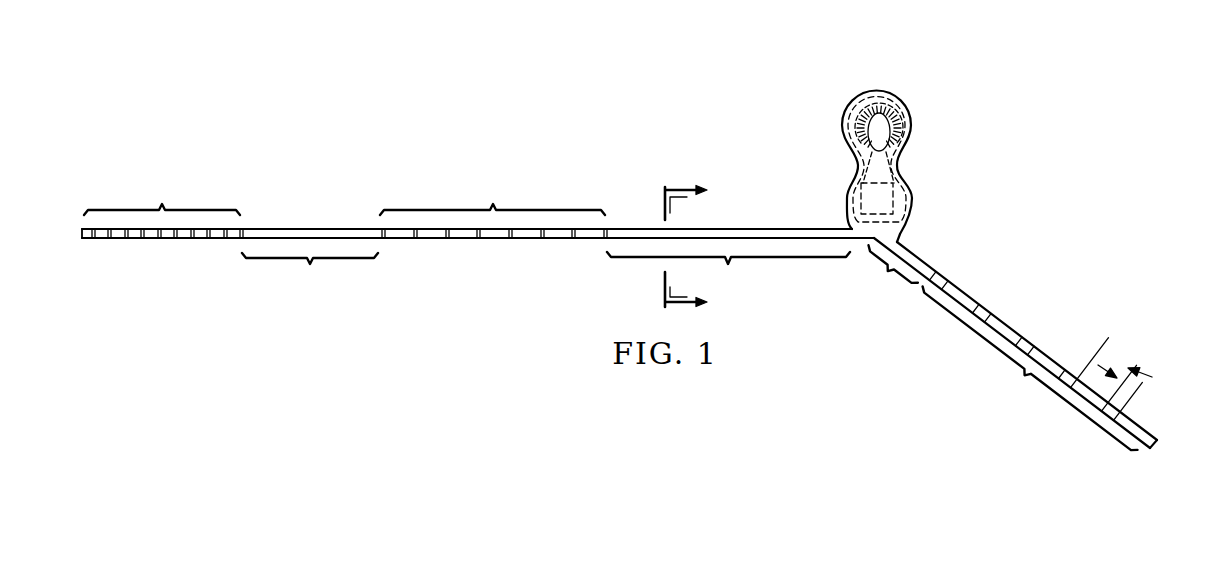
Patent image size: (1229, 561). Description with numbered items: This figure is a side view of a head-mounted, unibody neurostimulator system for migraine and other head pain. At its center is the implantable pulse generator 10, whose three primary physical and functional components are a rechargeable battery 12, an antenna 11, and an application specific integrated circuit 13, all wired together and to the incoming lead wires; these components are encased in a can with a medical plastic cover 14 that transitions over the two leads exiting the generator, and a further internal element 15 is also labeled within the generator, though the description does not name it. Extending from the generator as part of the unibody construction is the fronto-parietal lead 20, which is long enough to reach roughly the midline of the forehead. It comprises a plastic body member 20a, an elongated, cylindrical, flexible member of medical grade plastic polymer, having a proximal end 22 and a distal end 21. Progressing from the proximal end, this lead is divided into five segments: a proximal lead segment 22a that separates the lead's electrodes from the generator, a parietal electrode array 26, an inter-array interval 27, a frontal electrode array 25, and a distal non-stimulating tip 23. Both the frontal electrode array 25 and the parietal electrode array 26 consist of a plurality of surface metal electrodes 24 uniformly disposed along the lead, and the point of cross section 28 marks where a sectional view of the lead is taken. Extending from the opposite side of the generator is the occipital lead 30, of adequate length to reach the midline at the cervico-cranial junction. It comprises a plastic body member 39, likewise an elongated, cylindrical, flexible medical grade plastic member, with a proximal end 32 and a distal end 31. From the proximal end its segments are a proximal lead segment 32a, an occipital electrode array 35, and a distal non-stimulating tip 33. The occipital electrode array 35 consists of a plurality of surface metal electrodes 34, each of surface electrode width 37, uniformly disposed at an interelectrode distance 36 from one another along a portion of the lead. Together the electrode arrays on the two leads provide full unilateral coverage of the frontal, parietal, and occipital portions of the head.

The implantable pulse generator 10 is at (880, 87).
The antenna 11 is at (912, 120).
The battery 12 is at (845, 120).
The application specific integrated circuit 13 is at (895, 200).
The medical plastic cover 14 is at (856, 168).
The reflector 15 is at (910, 160).
The fronto-parietal lead 20 is at (634, 222).
The plastic body member 20a is at (762, 229).
The distal end 21 is at (82, 232).
The proximal end 22 is at (822, 220).
The proximal lead segment 22a is at (728, 277).
The distal non-stimulating tip 23 is at (88, 239).
The surface metal electrode 24 is at (143, 239).
The frontal electrode array 25 is at (162, 197).
The parietal electrode array 26 is at (492, 197).
The inter-array interval 27 is at (310, 276).
The point of cross section 28 is at (676, 189).
The occipital lead 30 is at (1026, 328).
The distal end 31 is at (1160, 451).
The proximal end 32 is at (922, 236).
The proximal lead segment 32a is at (890, 276).
The distal non-stimulating tip 33 is at (1154, 442).
The surface metal electrode 34 is at (990, 313).
The occipital electrode array 35 is at (1030, 368).
The interelectrode distance 36 is at (1096, 331).
The surface electrode width 37 is at (1136, 397).
The plastic body member 39 is at (953, 292).